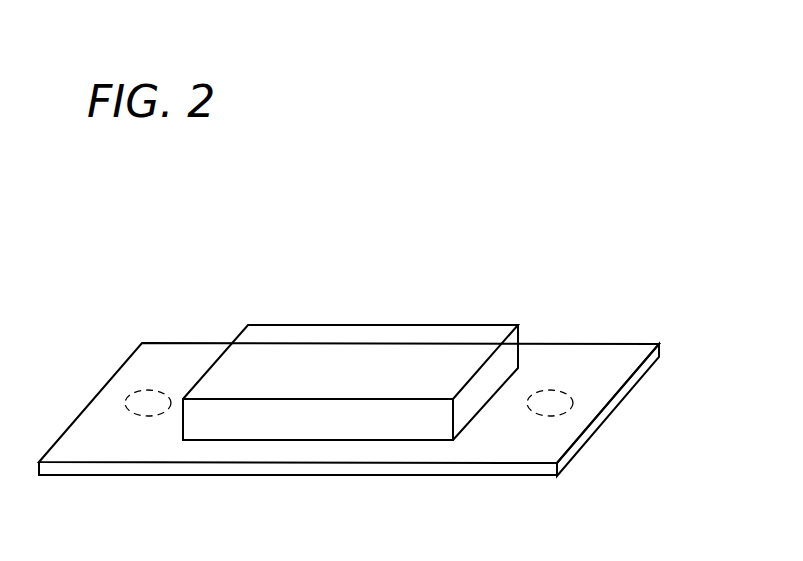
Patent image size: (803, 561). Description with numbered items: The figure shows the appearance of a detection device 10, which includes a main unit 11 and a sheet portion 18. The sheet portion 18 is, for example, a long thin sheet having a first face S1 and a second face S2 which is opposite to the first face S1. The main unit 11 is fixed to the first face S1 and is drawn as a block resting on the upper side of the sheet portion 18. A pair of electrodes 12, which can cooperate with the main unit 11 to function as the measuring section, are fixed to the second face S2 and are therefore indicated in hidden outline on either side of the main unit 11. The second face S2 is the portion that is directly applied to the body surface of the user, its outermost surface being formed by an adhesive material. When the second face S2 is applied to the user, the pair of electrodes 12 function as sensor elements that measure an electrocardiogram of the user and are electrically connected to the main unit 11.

The detection device 10 is at (372, 238).
The main unit 11 is at (440, 337).
The pair of electrodes 12 is at (147, 398).
The sheet portion 18 is at (378, 407).
The first face S1 is at (597, 365).
The second face S2 is at (607, 421).